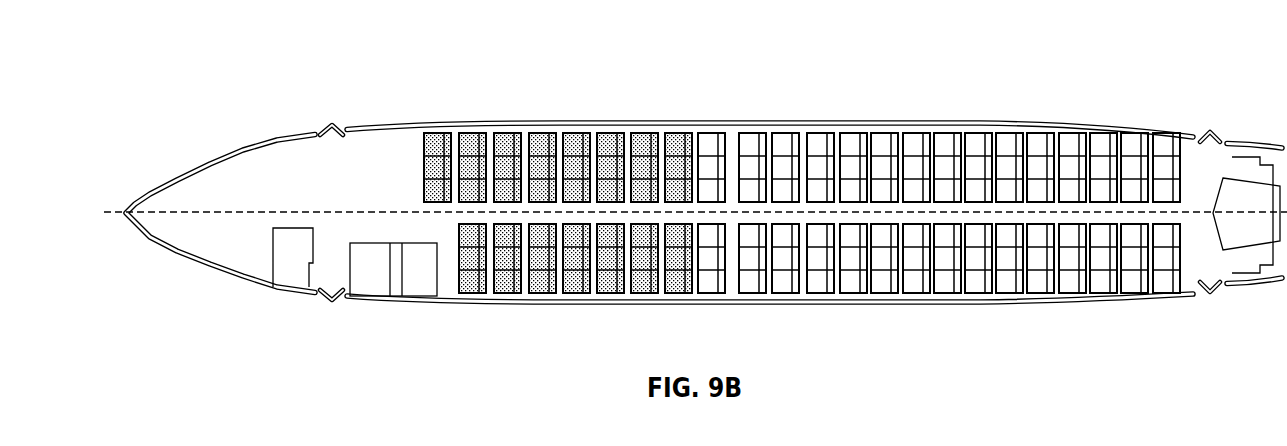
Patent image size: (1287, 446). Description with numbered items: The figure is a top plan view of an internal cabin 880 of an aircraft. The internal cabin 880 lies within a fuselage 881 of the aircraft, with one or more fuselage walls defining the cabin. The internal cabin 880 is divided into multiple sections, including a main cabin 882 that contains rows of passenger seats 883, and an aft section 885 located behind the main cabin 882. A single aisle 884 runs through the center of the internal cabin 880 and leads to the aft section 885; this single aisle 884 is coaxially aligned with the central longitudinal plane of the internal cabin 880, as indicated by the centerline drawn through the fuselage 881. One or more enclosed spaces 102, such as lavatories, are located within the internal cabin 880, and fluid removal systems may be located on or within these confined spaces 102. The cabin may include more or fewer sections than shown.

The internal cabin 880 is at (347, 72).
The fuselage 881 is at (527, 127).
The main cabin 882 is at (473, 142).
The passenger seats 883 is at (710, 152).
The single aisle 884 is at (818, 208).
The aft section 885 is at (1197, 153).
The enclosed spaces 102 is at (393, 270).